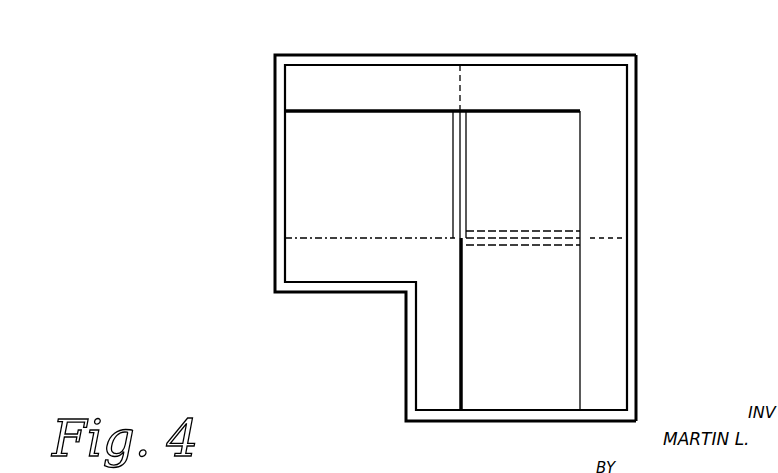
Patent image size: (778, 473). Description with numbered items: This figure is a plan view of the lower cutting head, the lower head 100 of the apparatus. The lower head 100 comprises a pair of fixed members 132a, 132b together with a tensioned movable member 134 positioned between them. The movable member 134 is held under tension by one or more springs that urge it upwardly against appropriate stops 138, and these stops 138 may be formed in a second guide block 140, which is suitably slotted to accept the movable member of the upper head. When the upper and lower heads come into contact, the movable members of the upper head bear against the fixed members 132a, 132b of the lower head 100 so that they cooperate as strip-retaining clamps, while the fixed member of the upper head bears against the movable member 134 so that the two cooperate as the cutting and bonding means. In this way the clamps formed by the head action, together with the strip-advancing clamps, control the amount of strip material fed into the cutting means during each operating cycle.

The lower head 100 is at (654, 126).
The fixed member 132a is at (306, 161).
The fixed member 132b is at (494, 400).
The movable member 134 is at (520, 178).
The stops 138 is at (529, 84).
The second guide block 140 is at (634, 281).